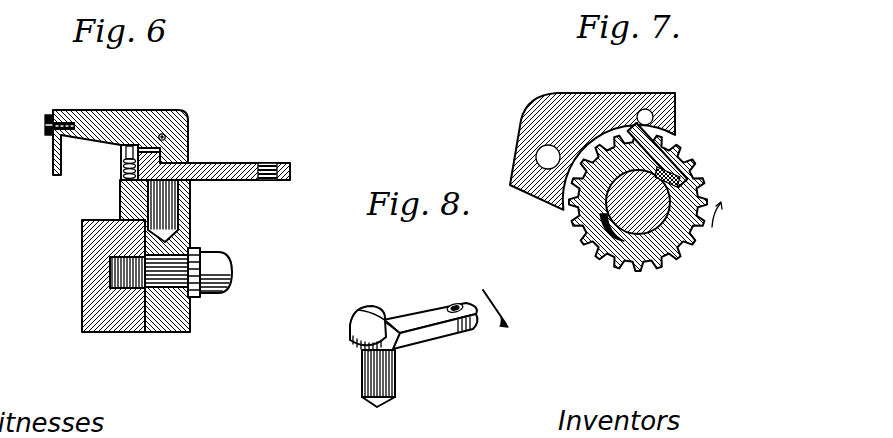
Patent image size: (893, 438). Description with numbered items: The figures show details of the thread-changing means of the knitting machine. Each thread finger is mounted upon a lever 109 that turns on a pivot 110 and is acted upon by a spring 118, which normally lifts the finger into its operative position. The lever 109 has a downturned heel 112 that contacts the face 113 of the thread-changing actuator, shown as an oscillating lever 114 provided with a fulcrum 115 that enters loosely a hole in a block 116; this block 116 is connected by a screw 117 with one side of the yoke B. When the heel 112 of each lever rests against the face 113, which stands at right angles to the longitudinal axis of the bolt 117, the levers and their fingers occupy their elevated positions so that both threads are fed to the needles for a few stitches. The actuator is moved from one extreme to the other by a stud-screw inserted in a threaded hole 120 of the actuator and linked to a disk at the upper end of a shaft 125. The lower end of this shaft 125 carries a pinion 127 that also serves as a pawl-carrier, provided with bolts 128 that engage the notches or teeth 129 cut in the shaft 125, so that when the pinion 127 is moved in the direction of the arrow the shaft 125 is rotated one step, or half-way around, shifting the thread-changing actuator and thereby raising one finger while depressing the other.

In FIG. 6, the lever 109 is at (106, 110).
In FIG. 6, the pivot 110 is at (165, 136).
In FIG. 6, the downturned heel 112 is at (188, 154).
In FIG. 6, the face 113 is at (190, 148).
In FIG. 8, the face 113 is at (360, 310).
In FIG. 6, the oscillating lever 114 is at (238, 183).
In FIG. 8, the oscillating lever 114 is at (421, 310).
In FIG. 6, the fulcrum 115 is at (190, 210).
In FIG. 8, the fulcrum 115 is at (395, 365).
In FIG. 6, the block 116 is at (190, 233).
In FIG. 6, the screw 117 is at (226, 261).
In FIG. 6, the spring 118 is at (121, 170).
In FIG. 6, the threaded hole 120 is at (272, 165).
In FIG. 8, the threaded hole 120 is at (465, 298).
In FIG. 7, the shaft 125 is at (698, 190).
In FIG. 7, the pinion 127 is at (690, 160).
In FIG. 7, the bolts 128 is at (673, 160).
In FIG. 7, the notches or teeth 129 is at (641, 170).
In FIG. 6, the yoke B is at (90, 302).